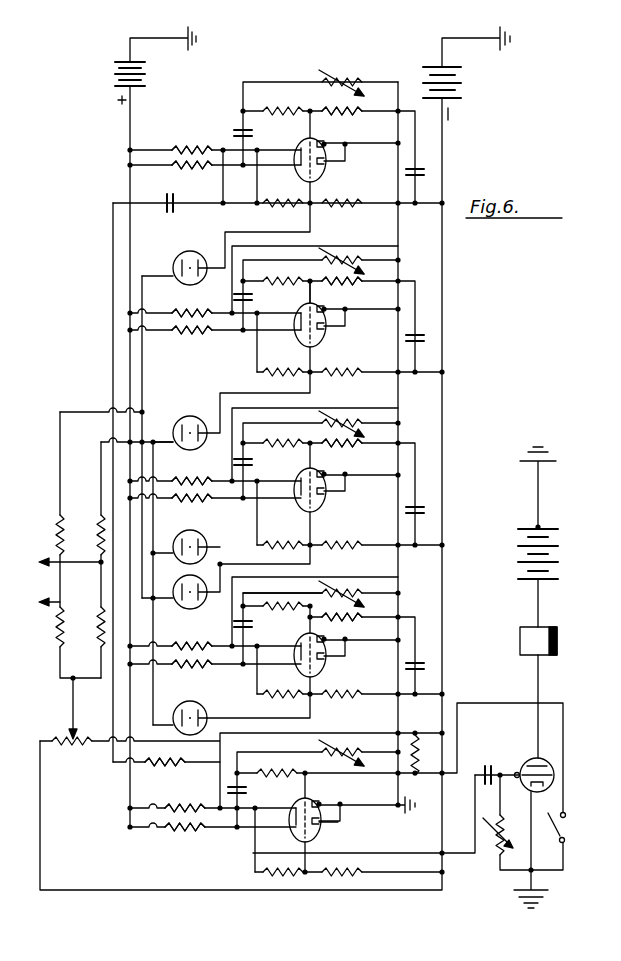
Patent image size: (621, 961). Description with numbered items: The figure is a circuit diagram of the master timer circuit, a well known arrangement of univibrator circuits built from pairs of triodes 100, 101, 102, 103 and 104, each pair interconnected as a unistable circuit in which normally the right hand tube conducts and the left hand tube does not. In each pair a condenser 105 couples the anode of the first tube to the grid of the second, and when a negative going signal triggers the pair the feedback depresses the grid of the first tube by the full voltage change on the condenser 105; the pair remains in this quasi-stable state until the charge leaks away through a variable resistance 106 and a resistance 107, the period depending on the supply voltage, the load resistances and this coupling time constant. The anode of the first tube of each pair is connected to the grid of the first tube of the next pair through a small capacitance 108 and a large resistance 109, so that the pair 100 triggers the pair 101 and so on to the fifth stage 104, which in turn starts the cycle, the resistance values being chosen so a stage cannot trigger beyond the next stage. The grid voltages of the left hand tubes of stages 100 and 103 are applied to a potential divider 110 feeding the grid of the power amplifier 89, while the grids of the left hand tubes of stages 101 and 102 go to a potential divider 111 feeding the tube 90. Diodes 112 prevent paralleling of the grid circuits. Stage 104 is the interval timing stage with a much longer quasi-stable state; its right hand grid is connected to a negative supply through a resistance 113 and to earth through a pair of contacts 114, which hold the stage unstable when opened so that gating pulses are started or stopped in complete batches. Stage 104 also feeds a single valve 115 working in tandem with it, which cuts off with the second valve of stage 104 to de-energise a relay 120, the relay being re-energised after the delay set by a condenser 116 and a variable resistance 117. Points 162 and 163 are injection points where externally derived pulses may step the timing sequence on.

The power amplifier 89 is at (52, 602).
The tube 90 is at (50, 566).
The pair of triodes 100 is at (328, 670).
The pair of triodes 101 is at (328, 500).
The pair of triodes 102 is at (328, 336).
The pair of triodes 103 is at (328, 176).
The interval timing stage 104 is at (314, 835).
The condenser 105 is at (236, 134).
The variable resistance 106 is at (345, 76).
The resistance 107 is at (197, 167).
The small capacitance 108 is at (427, 170).
The large resistance 109 is at (340, 119).
The potential divider 110 is at (60, 515).
The potential divider 111 is at (98, 530).
The diodes 112 is at (196, 250).
The resistance 113 is at (420, 753).
The pair of contacts 114 is at (558, 833).
The single valve 115 is at (525, 758).
The condenser 116 is at (483, 770).
The variable resistance 117 is at (492, 842).
The relay 120 is at (520, 641).
The point 162 is at (298, 595).
The point 163 is at (310, 281).